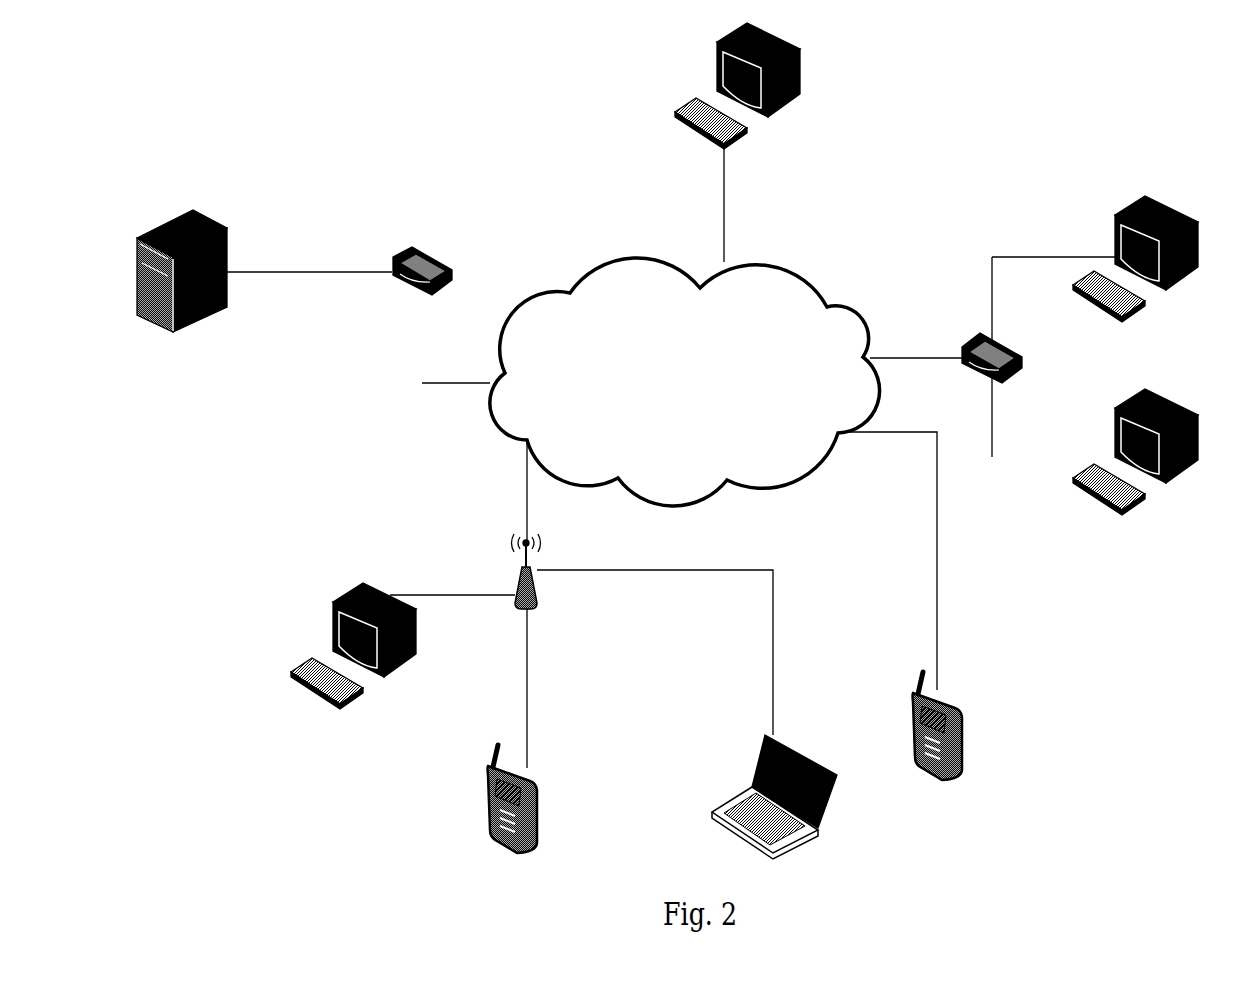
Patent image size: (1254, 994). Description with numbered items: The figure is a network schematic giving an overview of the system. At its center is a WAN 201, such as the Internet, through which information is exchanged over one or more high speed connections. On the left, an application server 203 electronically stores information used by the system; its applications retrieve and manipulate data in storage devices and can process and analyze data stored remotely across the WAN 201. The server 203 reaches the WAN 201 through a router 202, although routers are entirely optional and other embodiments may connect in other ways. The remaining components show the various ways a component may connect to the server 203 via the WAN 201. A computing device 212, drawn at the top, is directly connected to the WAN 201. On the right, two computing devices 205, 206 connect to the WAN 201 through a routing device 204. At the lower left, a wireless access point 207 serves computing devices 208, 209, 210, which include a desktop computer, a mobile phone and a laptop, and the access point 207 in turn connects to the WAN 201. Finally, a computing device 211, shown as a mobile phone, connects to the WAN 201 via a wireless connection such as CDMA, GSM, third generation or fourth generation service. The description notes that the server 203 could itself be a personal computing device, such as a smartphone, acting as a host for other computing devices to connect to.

The WAN 201 is at (685, 391).
The router 202 is at (395, 293).
The application server 203 is at (191, 278).
The routing device 204 is at (977, 377).
The computing device 205 is at (1142, 259).
The computing device 206 is at (1139, 461).
The wireless access point 207 is at (547, 576).
The computing device 208 is at (353, 651).
The computing device 209 is at (523, 820).
The computing device 210 is at (777, 807).
The computing device 211 is at (953, 745).
The computing device 212 is at (747, 86).